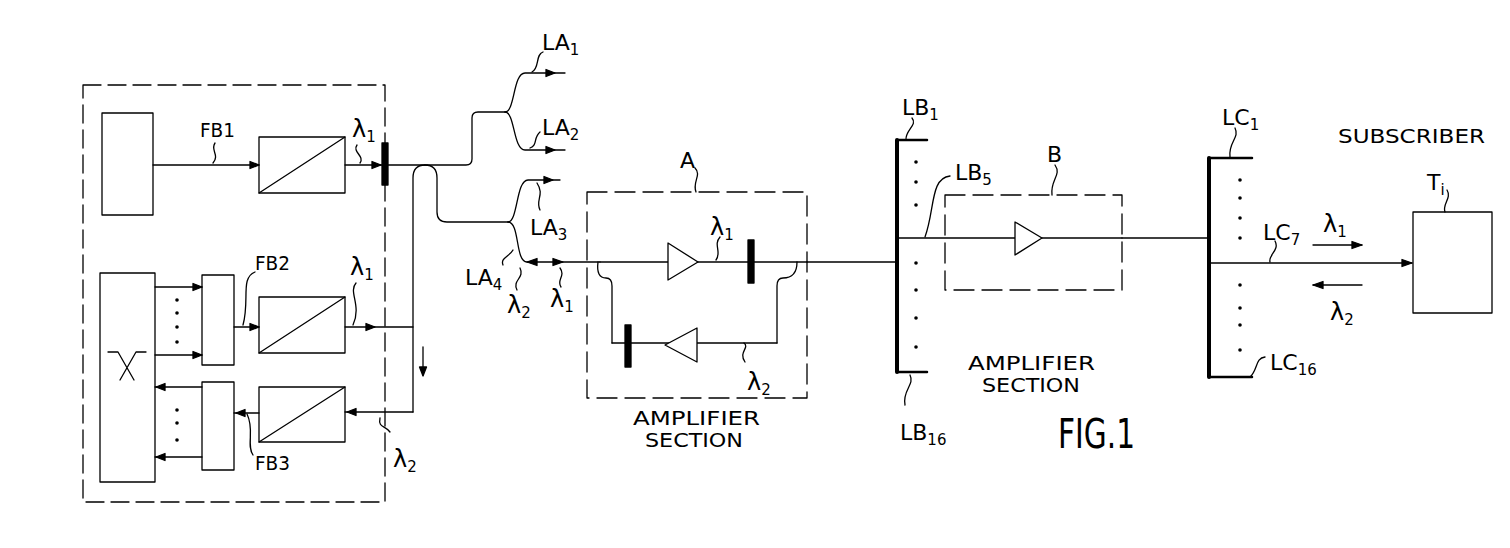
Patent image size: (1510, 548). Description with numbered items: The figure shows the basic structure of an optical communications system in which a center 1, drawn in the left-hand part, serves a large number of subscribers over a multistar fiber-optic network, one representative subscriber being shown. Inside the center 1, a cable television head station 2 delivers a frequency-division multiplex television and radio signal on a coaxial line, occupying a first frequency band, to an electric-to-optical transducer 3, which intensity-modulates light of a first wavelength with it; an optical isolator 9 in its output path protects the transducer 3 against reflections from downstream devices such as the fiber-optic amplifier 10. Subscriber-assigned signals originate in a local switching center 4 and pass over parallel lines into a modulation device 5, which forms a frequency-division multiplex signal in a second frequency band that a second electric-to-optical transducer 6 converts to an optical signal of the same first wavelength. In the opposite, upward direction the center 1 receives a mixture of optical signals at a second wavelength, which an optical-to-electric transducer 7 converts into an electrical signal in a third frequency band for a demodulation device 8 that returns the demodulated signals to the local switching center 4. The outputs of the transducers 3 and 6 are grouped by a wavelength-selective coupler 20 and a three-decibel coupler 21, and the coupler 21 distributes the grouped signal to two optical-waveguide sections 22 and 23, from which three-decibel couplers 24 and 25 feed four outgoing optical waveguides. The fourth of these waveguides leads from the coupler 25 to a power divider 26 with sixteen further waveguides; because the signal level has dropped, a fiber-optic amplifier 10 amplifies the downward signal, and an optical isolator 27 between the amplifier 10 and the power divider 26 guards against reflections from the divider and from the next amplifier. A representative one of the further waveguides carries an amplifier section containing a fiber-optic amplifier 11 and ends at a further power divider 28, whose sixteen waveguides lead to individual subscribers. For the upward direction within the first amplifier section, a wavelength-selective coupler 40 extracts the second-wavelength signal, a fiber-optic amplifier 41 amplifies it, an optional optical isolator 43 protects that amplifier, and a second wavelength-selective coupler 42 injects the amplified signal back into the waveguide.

The center 1 is at (336, 86).
The cable television head station 2 is at (153, 123).
The electric-to-optical transducer 3 is at (308, 137).
The local switching center 4 is at (142, 273).
The modulation device 5 is at (222, 275).
The electric-to-optical transducer 6 is at (318, 297).
The optical-to-electric transducer 7 is at (342, 387).
The demodulation device 8 is at (236, 386).
The optical isolator 9 is at (388, 143).
The fiber-optic amplifier 10 is at (676, 243).
The fiber-optic amplifier 11 is at (1035, 250).
The optical waveguide-coupler 20 is at (400, 305).
The optical waveguide-coupler 21 is at (430, 165).
The optical-waveguide section 22 is at (457, 166).
The optical-waveguide section 23 is at (450, 222).
The optical waveguide-coupler 24 is at (505, 110).
The optical waveguide-coupler 25 is at (507, 218).
The power divider 26 is at (888, 268).
The optical isolator 27 is at (752, 238).
The power divider 28 is at (1203, 240).
The wavelength-selective fiber-optic coupler 40 is at (795, 262).
The fiber-optic amplifier 41 is at (690, 358).
The wavelength-selective coupler 42 is at (600, 260).
The optical isolator 43 is at (630, 325).